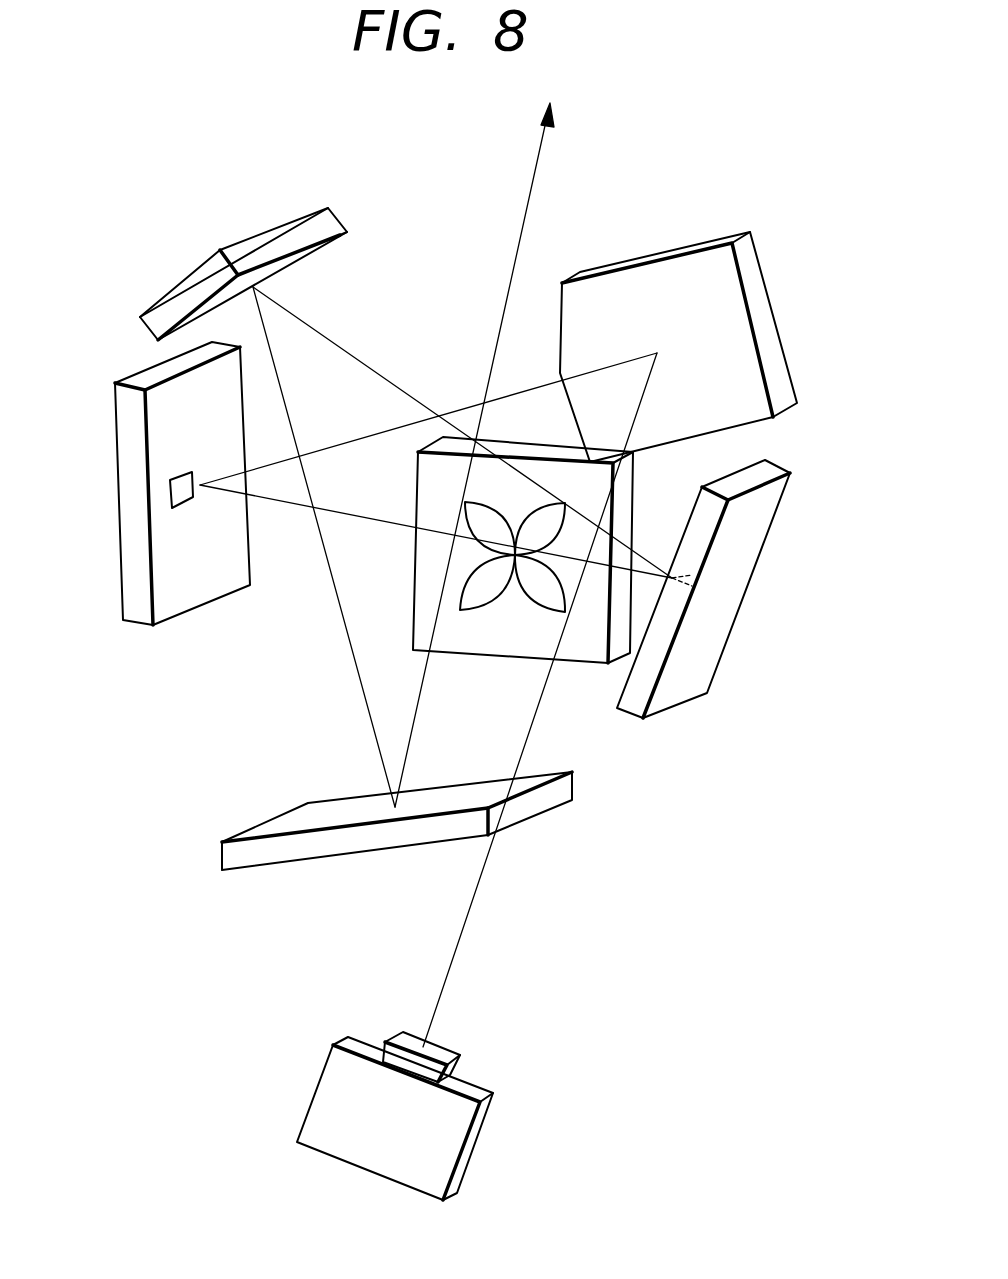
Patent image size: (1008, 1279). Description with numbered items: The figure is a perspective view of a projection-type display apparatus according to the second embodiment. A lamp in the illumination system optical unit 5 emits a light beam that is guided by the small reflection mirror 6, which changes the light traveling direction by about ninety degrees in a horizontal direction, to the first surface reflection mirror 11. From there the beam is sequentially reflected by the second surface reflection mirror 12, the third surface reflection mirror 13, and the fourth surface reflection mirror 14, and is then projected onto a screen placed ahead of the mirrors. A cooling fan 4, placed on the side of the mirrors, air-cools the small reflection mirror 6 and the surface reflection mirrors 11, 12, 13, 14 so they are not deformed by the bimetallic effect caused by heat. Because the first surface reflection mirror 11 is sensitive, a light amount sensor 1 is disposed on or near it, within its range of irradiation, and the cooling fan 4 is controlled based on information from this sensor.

The light amount sensor 1 is at (177, 493).
The cooling fan 4 is at (582, 648).
The illumination system optical unit 5 is at (470, 1143).
The small reflection mirror 6 is at (758, 307).
The first surface reflection mirror 11 is at (135, 565).
The second surface reflection mirror 12 is at (710, 643).
The third surface reflection mirror 13 is at (293, 233).
The fourth surface reflection mirror 14 is at (547, 798).